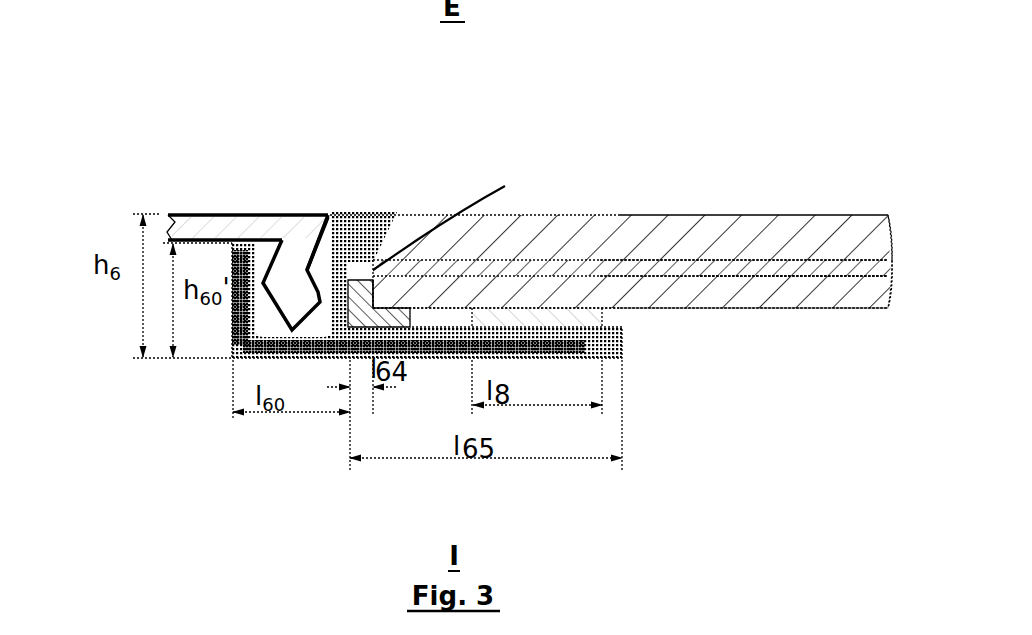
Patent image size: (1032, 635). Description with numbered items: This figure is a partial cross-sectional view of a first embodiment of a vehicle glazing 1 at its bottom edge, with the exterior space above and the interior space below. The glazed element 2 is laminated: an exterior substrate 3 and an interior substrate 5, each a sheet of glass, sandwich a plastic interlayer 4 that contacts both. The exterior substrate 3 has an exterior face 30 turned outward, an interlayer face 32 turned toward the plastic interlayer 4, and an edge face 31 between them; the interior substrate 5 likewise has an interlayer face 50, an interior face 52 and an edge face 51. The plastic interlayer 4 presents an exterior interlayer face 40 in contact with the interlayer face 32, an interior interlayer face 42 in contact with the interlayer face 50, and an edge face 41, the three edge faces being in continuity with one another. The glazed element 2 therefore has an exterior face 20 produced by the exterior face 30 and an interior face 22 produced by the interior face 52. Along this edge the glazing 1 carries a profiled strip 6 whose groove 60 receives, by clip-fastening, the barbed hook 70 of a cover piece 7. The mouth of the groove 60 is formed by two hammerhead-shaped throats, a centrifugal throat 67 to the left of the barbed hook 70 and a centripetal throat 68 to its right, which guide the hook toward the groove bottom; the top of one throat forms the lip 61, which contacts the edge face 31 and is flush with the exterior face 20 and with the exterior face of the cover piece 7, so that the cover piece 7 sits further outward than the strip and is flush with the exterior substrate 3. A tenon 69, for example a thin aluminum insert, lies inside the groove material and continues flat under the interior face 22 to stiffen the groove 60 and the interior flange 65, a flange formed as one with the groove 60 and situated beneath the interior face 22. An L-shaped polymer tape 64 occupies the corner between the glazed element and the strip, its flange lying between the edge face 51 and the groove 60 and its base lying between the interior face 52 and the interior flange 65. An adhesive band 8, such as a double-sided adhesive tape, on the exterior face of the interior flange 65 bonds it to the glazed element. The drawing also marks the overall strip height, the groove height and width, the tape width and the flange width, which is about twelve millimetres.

The glazing 1 is at (65, 112).
The glazed element 2 is at (835, 165).
The exterior substrate 3 is at (853, 250).
The plastic interlayer 4 is at (863, 267).
The interior substrate 5 is at (863, 300).
The profiled strip 6 is at (93, 282).
The cover piece 7 is at (262, 228).
The adhesive band 8 is at (530, 318).
The exterior face of the glazed element 20 is at (755, 214).
The interior face of the glazed element 22 is at (657, 310).
The exterior face 30 is at (660, 214).
The edge face 31 is at (375, 235).
The interlayer face 32 is at (663, 260).
The exterior interlayer face 40 is at (777, 258).
The edge face 41 is at (456, 219).
The interior interlayer face 42 is at (787, 277).
The interlayer face 50 is at (743, 275).
The edge face 51 is at (372, 292).
The interior face 52 is at (737, 308).
The groove 60 is at (257, 318).
The lip 61 is at (318, 258).
The polymer tape 64 is at (353, 317).
The interior flange 65 is at (468, 337).
The centrifugal throat 67 is at (262, 232).
The centripetal throat 68 is at (337, 245).
The tenon 69 is at (247, 340).
The barbed hook 70 is at (287, 277).